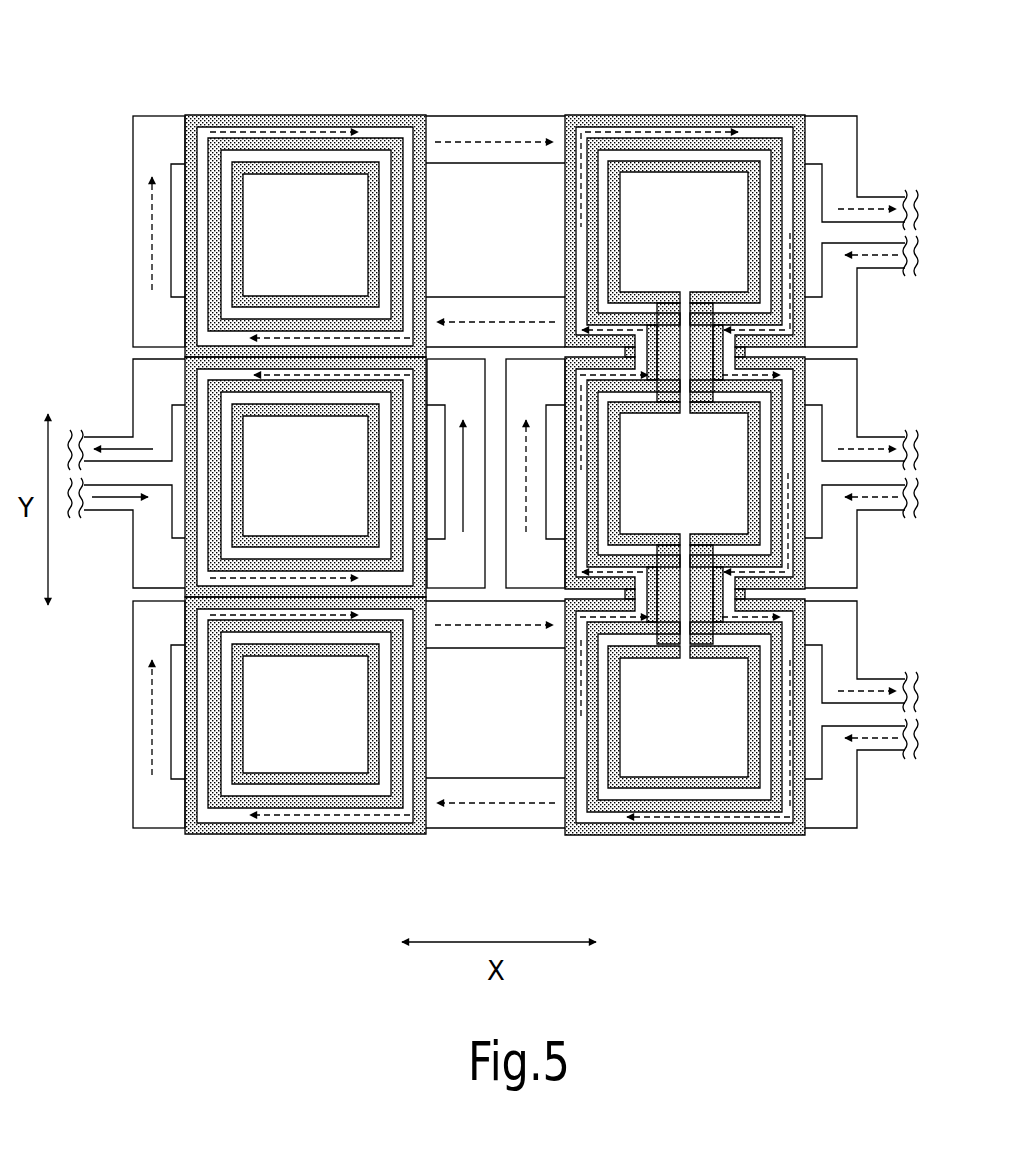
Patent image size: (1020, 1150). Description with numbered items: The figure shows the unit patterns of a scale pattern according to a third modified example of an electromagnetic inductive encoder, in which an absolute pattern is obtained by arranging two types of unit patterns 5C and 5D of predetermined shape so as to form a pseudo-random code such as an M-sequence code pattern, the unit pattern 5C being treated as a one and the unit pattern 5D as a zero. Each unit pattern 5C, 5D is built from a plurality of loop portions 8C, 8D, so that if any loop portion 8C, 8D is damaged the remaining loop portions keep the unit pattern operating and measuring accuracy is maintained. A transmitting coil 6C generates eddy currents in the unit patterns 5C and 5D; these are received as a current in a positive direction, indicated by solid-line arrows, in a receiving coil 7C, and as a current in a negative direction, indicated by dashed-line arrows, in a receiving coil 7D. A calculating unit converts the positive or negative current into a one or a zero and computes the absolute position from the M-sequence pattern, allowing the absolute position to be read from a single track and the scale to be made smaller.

The unit pattern 5C is at (237, 99).
The loop portions 8C is at (343, 115).
The transmitting coil 6C is at (497, 115).
The unit pattern 5D is at (617, 99).
The loop portions 8D is at (763, 115).
The receiving coil 7C is at (133, 380).
The receiving coil 7D is at (857, 398).